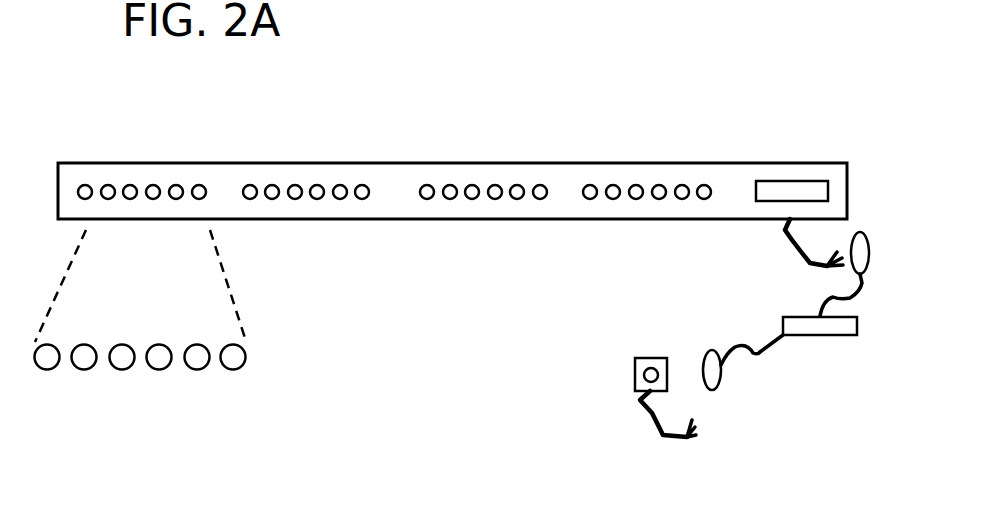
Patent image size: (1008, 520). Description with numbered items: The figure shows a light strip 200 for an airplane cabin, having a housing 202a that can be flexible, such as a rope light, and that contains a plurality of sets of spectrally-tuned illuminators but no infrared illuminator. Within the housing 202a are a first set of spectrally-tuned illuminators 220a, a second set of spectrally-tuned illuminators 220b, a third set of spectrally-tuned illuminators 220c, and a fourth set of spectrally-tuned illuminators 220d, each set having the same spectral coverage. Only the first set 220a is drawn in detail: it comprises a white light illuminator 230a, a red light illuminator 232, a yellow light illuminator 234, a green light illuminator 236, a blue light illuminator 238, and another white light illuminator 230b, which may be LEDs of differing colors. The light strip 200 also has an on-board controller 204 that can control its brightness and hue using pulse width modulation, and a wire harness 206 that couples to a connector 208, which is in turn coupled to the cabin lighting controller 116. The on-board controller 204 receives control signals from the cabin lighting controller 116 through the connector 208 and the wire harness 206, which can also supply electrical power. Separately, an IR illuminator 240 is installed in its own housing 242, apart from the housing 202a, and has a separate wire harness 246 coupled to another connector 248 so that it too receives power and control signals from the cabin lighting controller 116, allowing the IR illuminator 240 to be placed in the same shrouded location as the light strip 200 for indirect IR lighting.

The light strip 200 is at (603, 112).
The housing 202a is at (308, 162).
The on-board controller 204 is at (790, 180).
The wire harness 206 is at (787, 233).
The connector 208 is at (858, 233).
The cabin lighting controller 116 is at (820, 336).
The first set of spectrally-tuned illuminators 220a is at (207, 160).
The second set of spectrally-tuned illuminators 220b is at (372, 230).
The third set of spectrally-tuned illuminators 220c is at (547, 233).
The fourth set of spectrally-tuned illuminators 220d is at (712, 232).
The white light illuminator 230a is at (43, 368).
The red light illuminator 232 is at (80, 343).
The yellow light illuminator 234 is at (118, 368).
The green light illuminator 236 is at (152, 345).
The blue light illuminator 238 is at (195, 368).
The white light illuminator 230b is at (230, 368).
The IR illuminator 240 is at (653, 366).
The housing 242 is at (630, 357).
The wire harness 246 is at (640, 408).
The connector 248 is at (712, 391).